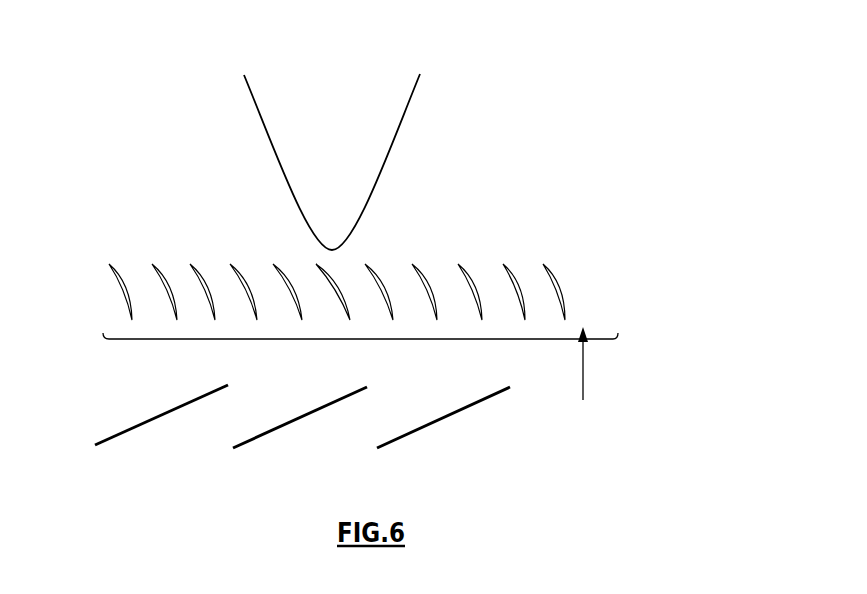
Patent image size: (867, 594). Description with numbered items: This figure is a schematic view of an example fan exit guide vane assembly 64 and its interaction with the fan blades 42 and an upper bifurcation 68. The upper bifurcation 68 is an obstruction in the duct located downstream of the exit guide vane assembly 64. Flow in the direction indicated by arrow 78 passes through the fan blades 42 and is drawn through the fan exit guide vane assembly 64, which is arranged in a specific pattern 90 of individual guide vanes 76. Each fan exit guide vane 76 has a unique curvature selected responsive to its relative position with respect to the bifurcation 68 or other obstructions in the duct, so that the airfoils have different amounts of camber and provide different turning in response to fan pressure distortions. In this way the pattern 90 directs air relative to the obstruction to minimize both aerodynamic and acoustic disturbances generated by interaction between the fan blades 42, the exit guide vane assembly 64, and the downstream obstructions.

The upper bifurcation 68 is at (342, 149).
The fan exit guide vane assembly 64 is at (90, 318).
The fan exit guide vane 76 is at (375, 339).
The arrow 78 is at (583, 400).
The pattern 90 is at (642, 290).
The fan blades 42 is at (133, 430).